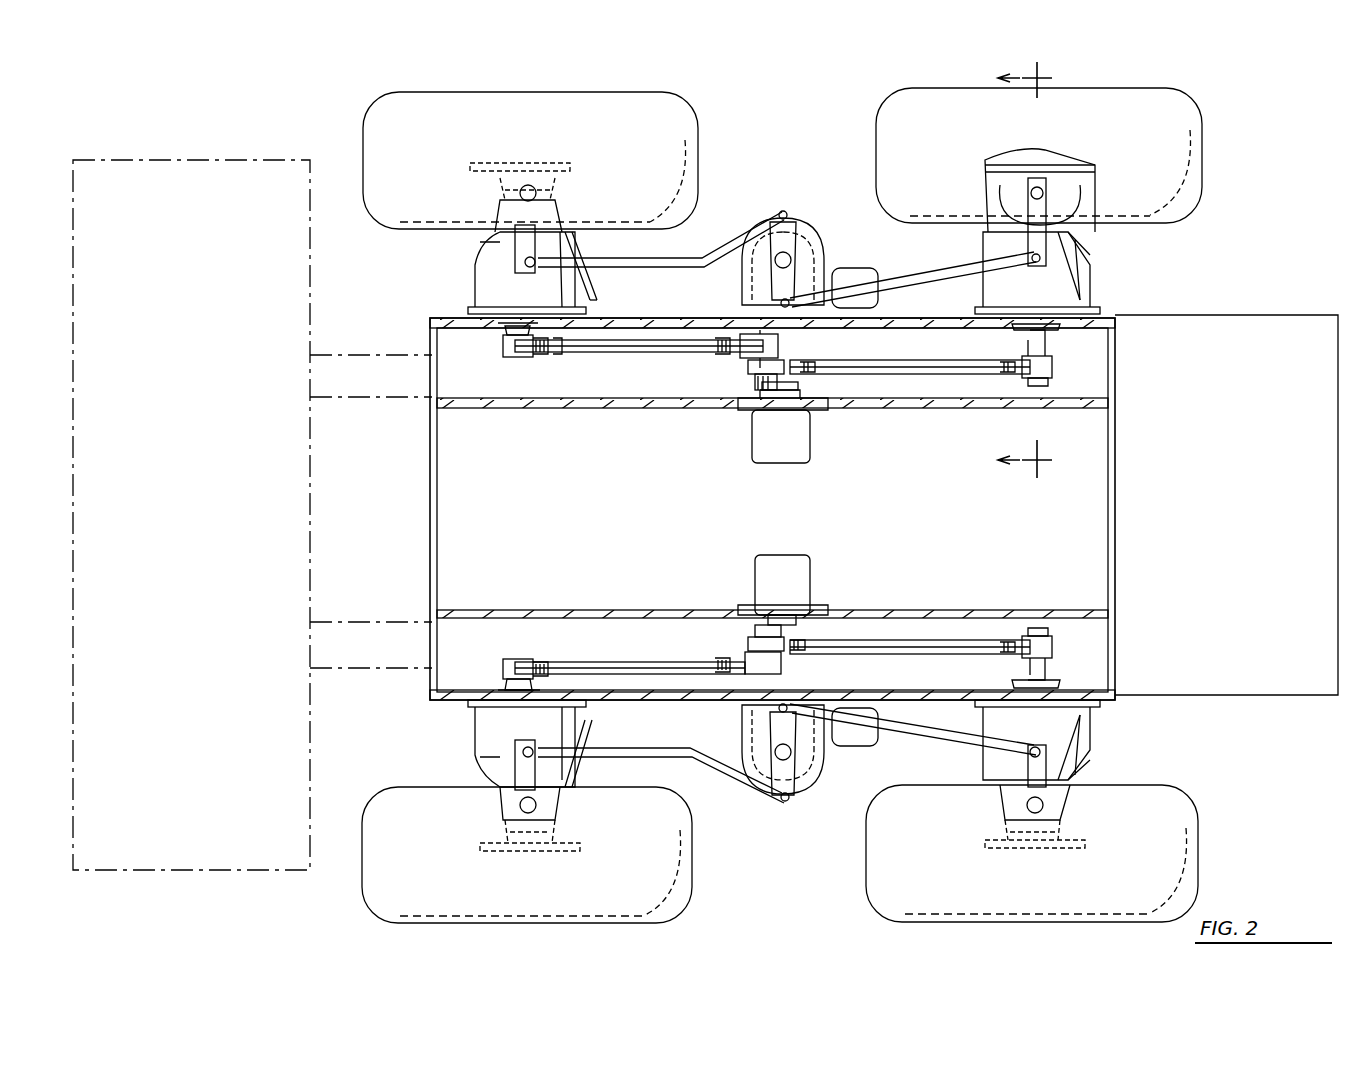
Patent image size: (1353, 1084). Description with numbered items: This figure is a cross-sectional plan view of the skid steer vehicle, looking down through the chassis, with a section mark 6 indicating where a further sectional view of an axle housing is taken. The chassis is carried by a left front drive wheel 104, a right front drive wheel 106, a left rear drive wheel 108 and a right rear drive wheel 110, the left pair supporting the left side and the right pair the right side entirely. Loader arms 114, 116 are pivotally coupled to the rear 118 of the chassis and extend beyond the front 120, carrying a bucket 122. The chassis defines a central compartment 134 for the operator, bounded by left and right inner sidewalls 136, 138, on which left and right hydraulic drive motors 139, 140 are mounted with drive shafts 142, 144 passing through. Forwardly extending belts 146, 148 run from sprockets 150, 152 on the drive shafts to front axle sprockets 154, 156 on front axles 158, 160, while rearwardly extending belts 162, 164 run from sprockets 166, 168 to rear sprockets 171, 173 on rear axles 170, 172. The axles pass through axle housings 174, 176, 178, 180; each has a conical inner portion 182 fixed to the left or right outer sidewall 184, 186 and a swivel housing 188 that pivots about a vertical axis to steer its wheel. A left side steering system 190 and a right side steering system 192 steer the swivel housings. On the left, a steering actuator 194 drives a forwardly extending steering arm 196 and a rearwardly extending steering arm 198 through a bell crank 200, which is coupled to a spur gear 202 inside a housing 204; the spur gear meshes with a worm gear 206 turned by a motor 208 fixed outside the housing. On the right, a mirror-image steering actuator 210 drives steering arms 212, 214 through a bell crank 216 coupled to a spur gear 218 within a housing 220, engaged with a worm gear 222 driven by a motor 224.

The section line 6 is at (1017, 270).
The left front drive wheel 104 is at (362, 905).
The right front drive wheel 106 is at (366, 110).
The left rear drive wheel 108 is at (1195, 818).
The right rear drive wheel 110 is at (1204, 150).
The loader arm 114 is at (362, 676).
The loader arm 116 is at (380, 348).
The rear of the chassis 118 is at (1290, 284).
The front of the chassis 120 is at (430, 492).
The bucket 122 is at (150, 880).
The central cavity or compartment 134 is at (610, 511).
The left inner sidewall 136 is at (500, 577).
The right inner sidewall 138 is at (478, 410).
The left side hydraulic drive motor 139 is at (812, 560).
The right side hydraulic drive motor 140 is at (812, 438).
The drive shaft 142 is at (755, 632).
The drive shaft 144 is at (755, 383).
The forwardly extending belt 146 is at (616, 660).
The forwardly extending belt 148 is at (565, 357).
The sprocket 150 is at (800, 666).
The sprocket 152 is at (798, 342).
The left side front axle sprocket 154 is at (503, 668).
The right side front axle sprocket 156 is at (504, 345).
The left side front axle 158 is at (528, 662).
The right side front axle 160 is at (520, 360).
The rearwardly extending belt 162 is at (944, 642).
The rearwardly extending belt 164 is at (972, 356).
The sprocket 166 is at (748, 645).
The sprocket 168 is at (510, 148).
The rear axle 170 is at (1040, 628).
The left side rear sprocket 171 is at (1055, 645).
The rear axle 172 is at (1002, 158).
The right side rear sprocket 173 is at (1058, 362).
The axle housing 174 is at (470, 761).
The axle housing 176 is at (480, 262).
The axle housing 178 is at (1090, 768).
The right rear axle housing 180 is at (1090, 250).
The conical inner portion 182 is at (580, 232).
The left outer sidewall 184 is at (605, 700).
The right outer sidewall 186 is at (605, 316).
The swivel housing 188 is at (500, 185).
The left side steering system 190 is at (777, 865).
The right side steering system 192 is at (810, 166).
The steering actuator 194 is at (820, 803).
The forwardly extending steering arm 196 is at (638, 750).
The rearwardly extending steering arm 198 is at (910, 740).
The bell crank 200 is at (805, 748).
The spur gear 202 is at (805, 785).
The steering actuator housing 204 is at (752, 788).
The worm gear 206 is at (745, 720).
The motor 208 is at (880, 712).
The steering actuator 210 is at (741, 165).
The forwardly extending steering arm 212 is at (655, 257).
The rearwardly extending steering arm 214 is at (918, 276).
The bell crank 216 is at (768, 268).
The spur gear 218 is at (826, 240).
The steering actuator housing 220 is at (800, 230).
The worm gear 222 is at (745, 298).
The motor 224 is at (880, 300).